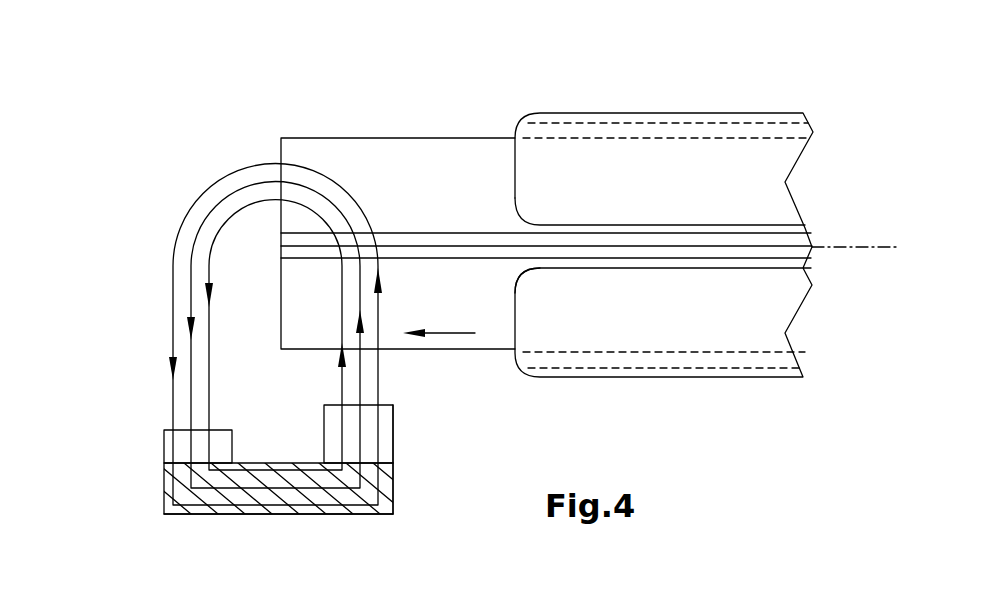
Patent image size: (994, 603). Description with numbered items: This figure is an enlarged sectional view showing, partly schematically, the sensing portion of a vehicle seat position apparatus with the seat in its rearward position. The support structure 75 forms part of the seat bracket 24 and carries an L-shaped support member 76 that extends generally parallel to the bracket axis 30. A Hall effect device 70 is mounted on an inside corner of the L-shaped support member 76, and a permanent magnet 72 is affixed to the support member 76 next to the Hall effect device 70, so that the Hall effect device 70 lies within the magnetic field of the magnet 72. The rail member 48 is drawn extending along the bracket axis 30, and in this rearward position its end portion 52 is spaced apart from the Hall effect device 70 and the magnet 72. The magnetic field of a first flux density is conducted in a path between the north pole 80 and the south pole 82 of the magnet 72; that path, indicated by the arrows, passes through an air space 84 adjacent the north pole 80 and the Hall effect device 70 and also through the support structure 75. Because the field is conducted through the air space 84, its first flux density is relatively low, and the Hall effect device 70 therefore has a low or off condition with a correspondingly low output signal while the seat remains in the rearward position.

The seat bracket 24 is at (408, 163).
The rail member 48 is at (640, 113).
The end portion of the rail member 52 is at (560, 177).
The bracket axis 30 is at (848, 247).
The air space 84 is at (128, 331).
The Hall effect device 70 is at (165, 440).
The north pole 80 is at (388, 418).
The permanent magnet 72 is at (388, 434).
The south pole 82 is at (388, 452).
The support structure 75 is at (267, 514).
The L-shaped support member 76 is at (325, 514).